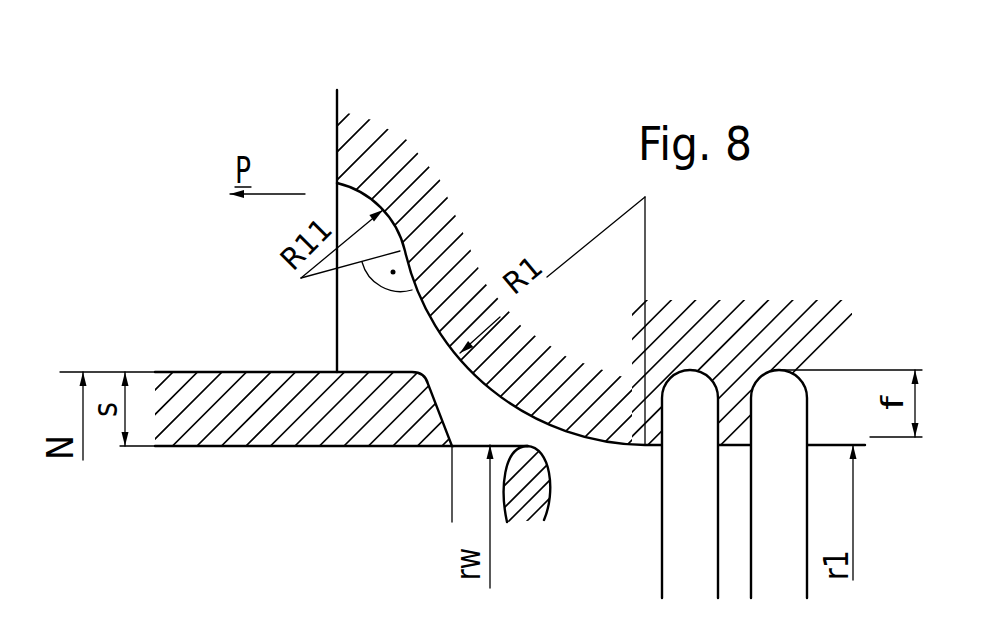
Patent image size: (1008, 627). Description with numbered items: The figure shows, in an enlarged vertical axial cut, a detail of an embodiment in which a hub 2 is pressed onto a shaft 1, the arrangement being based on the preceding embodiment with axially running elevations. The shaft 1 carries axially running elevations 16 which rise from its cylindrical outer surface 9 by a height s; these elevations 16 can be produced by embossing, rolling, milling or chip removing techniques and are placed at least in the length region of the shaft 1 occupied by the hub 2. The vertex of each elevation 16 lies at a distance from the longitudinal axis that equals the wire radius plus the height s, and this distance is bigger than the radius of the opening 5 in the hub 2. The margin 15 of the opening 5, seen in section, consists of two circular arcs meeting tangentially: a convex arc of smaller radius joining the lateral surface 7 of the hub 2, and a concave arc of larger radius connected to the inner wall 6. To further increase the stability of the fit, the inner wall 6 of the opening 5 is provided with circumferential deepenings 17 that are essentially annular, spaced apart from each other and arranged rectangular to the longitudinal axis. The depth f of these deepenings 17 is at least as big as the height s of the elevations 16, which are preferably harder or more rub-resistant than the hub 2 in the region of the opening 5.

The shaft 1 is at (258, 510).
The hub 2 is at (493, 160).
The opening 5 is at (628, 507).
The inner wall 6 is at (740, 432).
The lateral surface 7 is at (337, 112).
The cylindrical outer surface 9 is at (468, 447).
The margin 15 is at (432, 328).
The axially running elevations 16 is at (227, 372).
The circumferential deepenings 17 is at (777, 413).